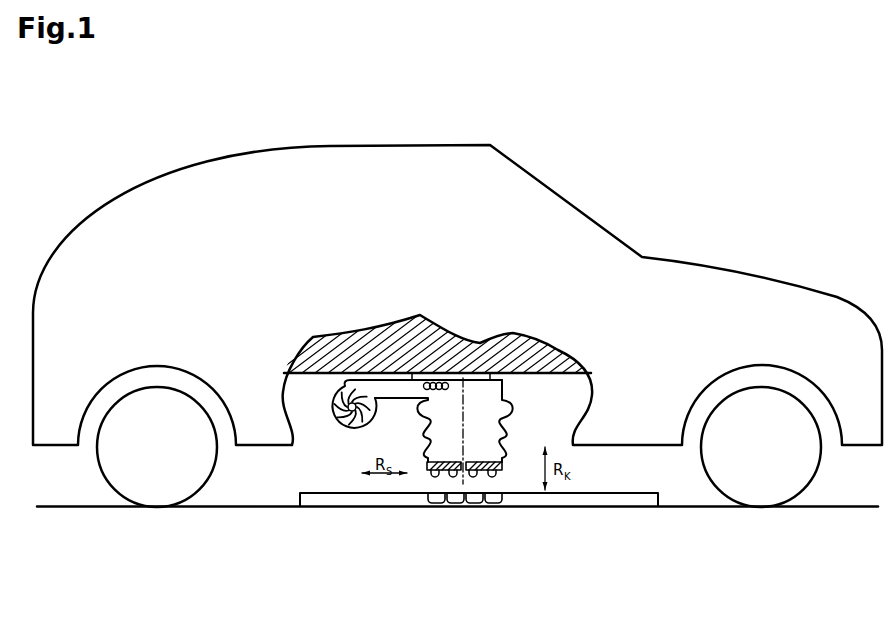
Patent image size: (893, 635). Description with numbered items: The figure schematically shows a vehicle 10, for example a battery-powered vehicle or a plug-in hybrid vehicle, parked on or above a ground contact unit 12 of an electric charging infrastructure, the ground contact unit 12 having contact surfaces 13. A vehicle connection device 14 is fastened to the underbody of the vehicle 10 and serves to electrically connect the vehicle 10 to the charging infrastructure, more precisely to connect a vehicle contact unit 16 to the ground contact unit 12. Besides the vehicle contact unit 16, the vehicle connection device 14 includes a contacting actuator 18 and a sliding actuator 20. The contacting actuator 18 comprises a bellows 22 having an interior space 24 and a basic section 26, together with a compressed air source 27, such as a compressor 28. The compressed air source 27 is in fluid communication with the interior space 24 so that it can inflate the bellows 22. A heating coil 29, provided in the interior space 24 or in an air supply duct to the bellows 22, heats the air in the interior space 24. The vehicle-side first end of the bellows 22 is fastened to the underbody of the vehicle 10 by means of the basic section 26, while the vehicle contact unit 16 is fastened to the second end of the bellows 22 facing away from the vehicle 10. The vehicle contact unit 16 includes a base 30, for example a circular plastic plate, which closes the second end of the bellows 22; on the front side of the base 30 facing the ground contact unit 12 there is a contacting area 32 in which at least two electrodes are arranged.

The vehicle 10 is at (738, 225).
The ground contact unit 12 is at (632, 503).
The contact surfaces 13 is at (492, 504).
The vehicle connection device 14 is at (557, 410).
The vehicle contact unit 16 is at (418, 480).
The contacting actuator 18 is at (362, 450).
The sliding actuator 20 is at (440, 462).
The bellows 22 is at (502, 455).
The interior space 24 is at (476, 420).
The basic section 26 is at (455, 388).
The compressed air source 27 is at (290, 251).
The compressor 28 is at (336, 398).
The heating coil 29 is at (425, 382).
The base 30 is at (497, 472).
The contacting area 32 is at (442, 480).